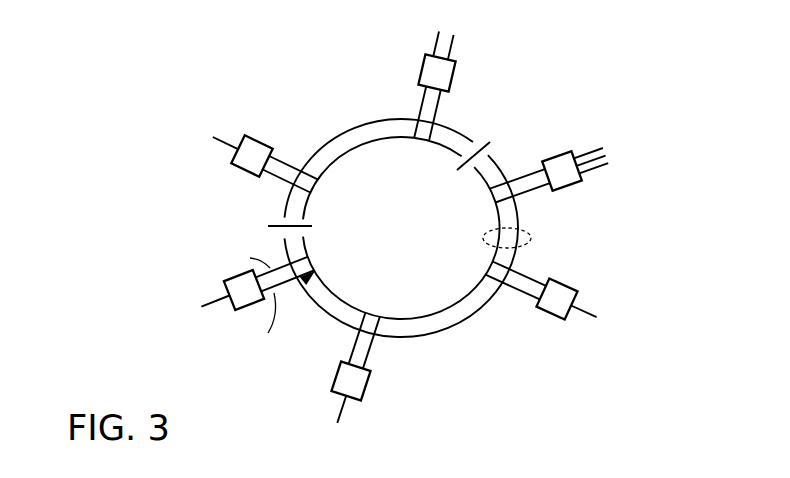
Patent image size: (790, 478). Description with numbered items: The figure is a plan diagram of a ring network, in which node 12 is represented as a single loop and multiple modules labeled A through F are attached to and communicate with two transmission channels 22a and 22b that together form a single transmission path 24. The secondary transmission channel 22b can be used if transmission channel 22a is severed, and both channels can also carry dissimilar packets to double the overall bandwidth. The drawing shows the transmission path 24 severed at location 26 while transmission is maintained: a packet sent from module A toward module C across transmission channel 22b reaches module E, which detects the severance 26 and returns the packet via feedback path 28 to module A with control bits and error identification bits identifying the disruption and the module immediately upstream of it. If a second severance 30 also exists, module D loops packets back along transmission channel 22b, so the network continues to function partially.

The node 12 is at (594, 86).
The transmission channel 22a is at (432, 318).
The transmission channel 22b is at (486, 309).
The transmission path 24 is at (531, 238).
The severance location 26 is at (272, 226).
The feedback path 28 is at (312, 290).
The severance 30 is at (482, 145).